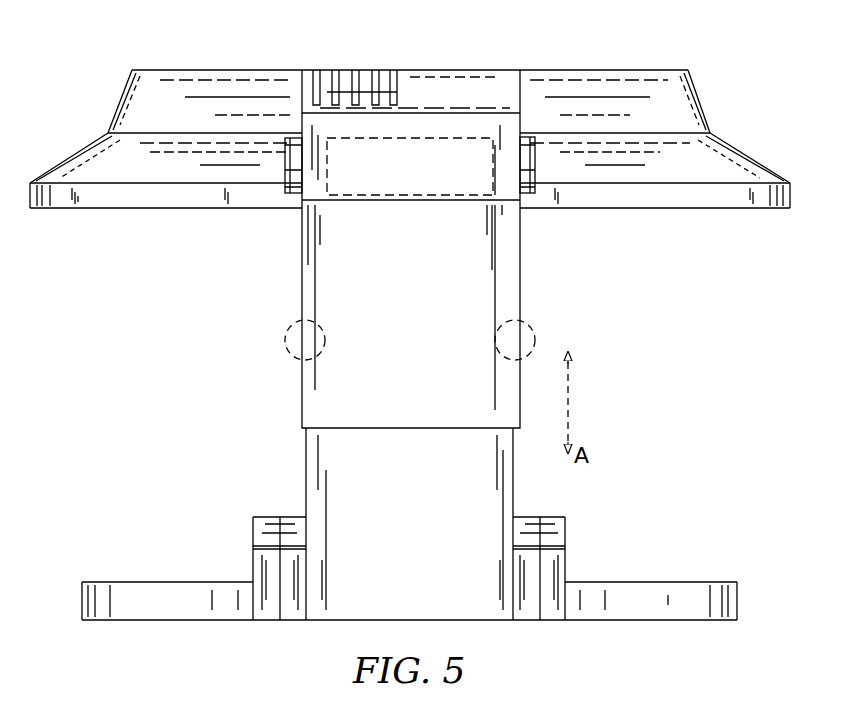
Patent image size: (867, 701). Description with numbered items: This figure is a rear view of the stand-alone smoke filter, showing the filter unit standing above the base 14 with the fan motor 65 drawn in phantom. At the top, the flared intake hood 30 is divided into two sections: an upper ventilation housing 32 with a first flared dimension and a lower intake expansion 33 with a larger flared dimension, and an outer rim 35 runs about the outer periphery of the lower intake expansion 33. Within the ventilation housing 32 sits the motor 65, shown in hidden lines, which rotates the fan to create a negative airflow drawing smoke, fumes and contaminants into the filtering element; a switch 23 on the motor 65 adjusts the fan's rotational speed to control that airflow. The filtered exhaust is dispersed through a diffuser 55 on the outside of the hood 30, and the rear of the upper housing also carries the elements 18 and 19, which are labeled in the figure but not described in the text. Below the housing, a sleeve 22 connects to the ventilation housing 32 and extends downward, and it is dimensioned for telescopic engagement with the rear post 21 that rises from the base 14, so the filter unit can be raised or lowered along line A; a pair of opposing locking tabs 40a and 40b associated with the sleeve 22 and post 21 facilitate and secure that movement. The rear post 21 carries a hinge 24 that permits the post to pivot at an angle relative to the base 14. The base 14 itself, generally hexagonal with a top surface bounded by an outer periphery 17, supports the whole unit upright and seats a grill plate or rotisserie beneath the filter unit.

The base 14 is at (717, 577).
The outer periphery 17 is at (159, 614).
The top assembly 18 is at (420, 62).
The upper housing 19 is at (504, 80).
The rear post 21 is at (414, 514).
The sleeve 22 is at (422, 357).
The switch 23 is at (530, 173).
The hinge 24 is at (558, 528).
The intake hood 30 is at (172, 70).
The ventilation housing 32 is at (120, 94).
The lower intake expansion 33 is at (62, 163).
The outer rim 35 is at (731, 202).
The locking tab 40a is at (520, 340).
The locking tab 40b is at (305, 343).
The diffuser 55 is at (316, 72).
The motor 65 is at (373, 190).